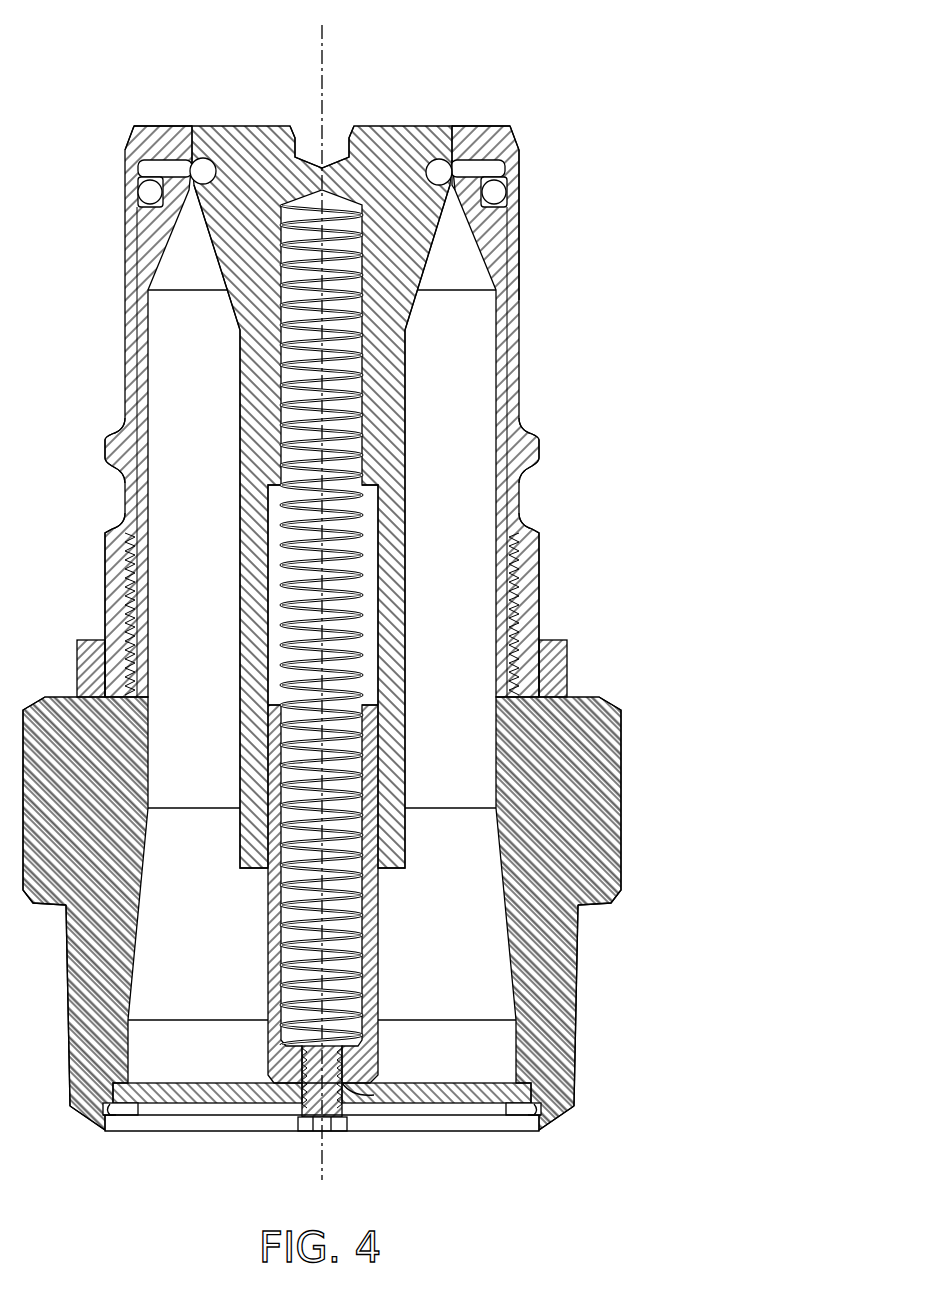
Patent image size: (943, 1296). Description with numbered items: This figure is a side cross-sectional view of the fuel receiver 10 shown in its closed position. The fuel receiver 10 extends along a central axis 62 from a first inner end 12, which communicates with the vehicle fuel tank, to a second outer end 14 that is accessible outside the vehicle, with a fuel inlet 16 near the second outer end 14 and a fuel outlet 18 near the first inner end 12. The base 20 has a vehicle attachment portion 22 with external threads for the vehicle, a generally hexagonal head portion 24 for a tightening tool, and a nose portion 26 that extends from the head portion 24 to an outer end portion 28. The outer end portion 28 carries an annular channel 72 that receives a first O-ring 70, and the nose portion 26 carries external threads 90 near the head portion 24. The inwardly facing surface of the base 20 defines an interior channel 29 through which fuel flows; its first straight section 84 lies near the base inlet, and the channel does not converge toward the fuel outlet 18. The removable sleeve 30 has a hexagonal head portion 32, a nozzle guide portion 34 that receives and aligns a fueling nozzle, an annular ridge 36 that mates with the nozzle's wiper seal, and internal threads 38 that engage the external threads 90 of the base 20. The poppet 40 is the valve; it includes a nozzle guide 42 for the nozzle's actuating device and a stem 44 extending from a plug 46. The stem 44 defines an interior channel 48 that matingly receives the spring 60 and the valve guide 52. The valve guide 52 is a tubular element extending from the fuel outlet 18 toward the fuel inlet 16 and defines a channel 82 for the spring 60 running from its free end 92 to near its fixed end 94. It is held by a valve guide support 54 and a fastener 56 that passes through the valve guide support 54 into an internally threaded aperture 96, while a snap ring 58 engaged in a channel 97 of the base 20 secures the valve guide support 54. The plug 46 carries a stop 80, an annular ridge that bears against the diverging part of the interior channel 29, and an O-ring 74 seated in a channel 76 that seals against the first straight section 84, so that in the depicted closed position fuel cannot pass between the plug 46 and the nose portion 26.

The fuel receiver 10 is at (356, 597).
The first inner end 12 is at (103, 1130).
The second outer end 14 is at (480, 126).
The fuel inlet 16 is at (197, 140).
The fuel outlet 18 is at (413, 1131).
The base 20 is at (626, 828).
The vehicle attachment portion 22 is at (579, 992).
The head portion 24 is at (621, 873).
The nose portion 26 is at (146, 373).
The outer end portion 28 is at (500, 152).
The interior channel 29 is at (179, 634).
The removable sleeve 30 is at (524, 360).
The head portion 32 is at (568, 672).
The nozzle guide portion 34 is at (521, 292).
The annular ridge 36 is at (537, 450).
The internal threads 38 is at (510, 568).
The poppet 40 is at (251, 124).
The nozzle guide 42 is at (345, 126).
The stem 44 is at (393, 460).
The plug 46 is at (243, 142).
The interior channel 48 is at (270, 534).
The valve guide 52 is at (287, 1065).
The valve guide support 54 is at (218, 1094).
The fastener 56 is at (350, 1122).
The snap ring 58 is at (128, 1112).
The spring 60 is at (362, 378).
The central axis 62 is at (330, 56).
The first O-ring 70 is at (507, 192).
The annular channel 72 is at (506, 164).
The O-ring 74 is at (447, 159).
The channel 76 is at (430, 162).
The stop 80 is at (196, 208).
The channel 82 is at (362, 922).
The first straight section 84 is at (178, 165).
The external threads 90 is at (514, 588).
The free end 92 is at (373, 702).
The fixed end 94 is at (374, 1095).
The internally threaded aperture 96 is at (342, 1060).
The channel 97 is at (110, 1118).